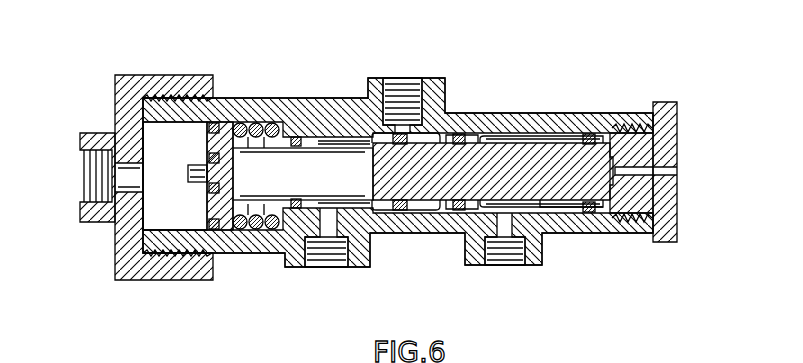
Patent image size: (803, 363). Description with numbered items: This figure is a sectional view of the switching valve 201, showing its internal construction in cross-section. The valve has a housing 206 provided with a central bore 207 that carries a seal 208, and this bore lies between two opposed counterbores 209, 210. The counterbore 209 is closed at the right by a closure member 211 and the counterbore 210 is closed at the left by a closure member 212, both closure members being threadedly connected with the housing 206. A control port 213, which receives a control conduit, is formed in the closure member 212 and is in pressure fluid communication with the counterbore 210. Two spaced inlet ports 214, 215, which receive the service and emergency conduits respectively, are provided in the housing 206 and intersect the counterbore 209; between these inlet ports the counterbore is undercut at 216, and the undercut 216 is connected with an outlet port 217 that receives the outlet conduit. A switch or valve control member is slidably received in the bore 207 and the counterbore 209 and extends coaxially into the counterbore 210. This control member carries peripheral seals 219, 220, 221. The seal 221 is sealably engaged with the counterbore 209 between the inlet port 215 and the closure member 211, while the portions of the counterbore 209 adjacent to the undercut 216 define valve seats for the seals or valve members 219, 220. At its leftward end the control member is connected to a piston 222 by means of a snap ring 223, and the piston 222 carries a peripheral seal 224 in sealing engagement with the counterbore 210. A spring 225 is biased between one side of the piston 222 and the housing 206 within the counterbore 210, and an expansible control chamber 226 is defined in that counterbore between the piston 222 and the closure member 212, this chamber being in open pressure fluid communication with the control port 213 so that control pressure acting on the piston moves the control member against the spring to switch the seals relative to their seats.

The switching valve 201 is at (474, 72).
The housing 206 is at (530, 112).
The bore 207 is at (307, 148).
The seal 208 is at (296, 137).
The counterbore 209 is at (555, 204).
The counterbore 210 is at (142, 128).
The closure member 211 is at (670, 142).
The closure member 212 is at (142, 75).
The control port 213 is at (127, 192).
The inlet port 214 is at (337, 265).
The inlet port 215 is at (512, 266).
The undercut 216 is at (422, 132).
The outlet port 217 is at (428, 60).
The peripheral seal 219 is at (398, 212).
The peripheral seal 220 is at (460, 212).
The peripheral seal 221 is at (590, 134).
The piston 222 is at (207, 140).
The snap ring 223 is at (197, 156).
The peripheral seal 224 is at (217, 233).
The spring 225 is at (253, 130).
The expansible control chamber 226 is at (160, 210).